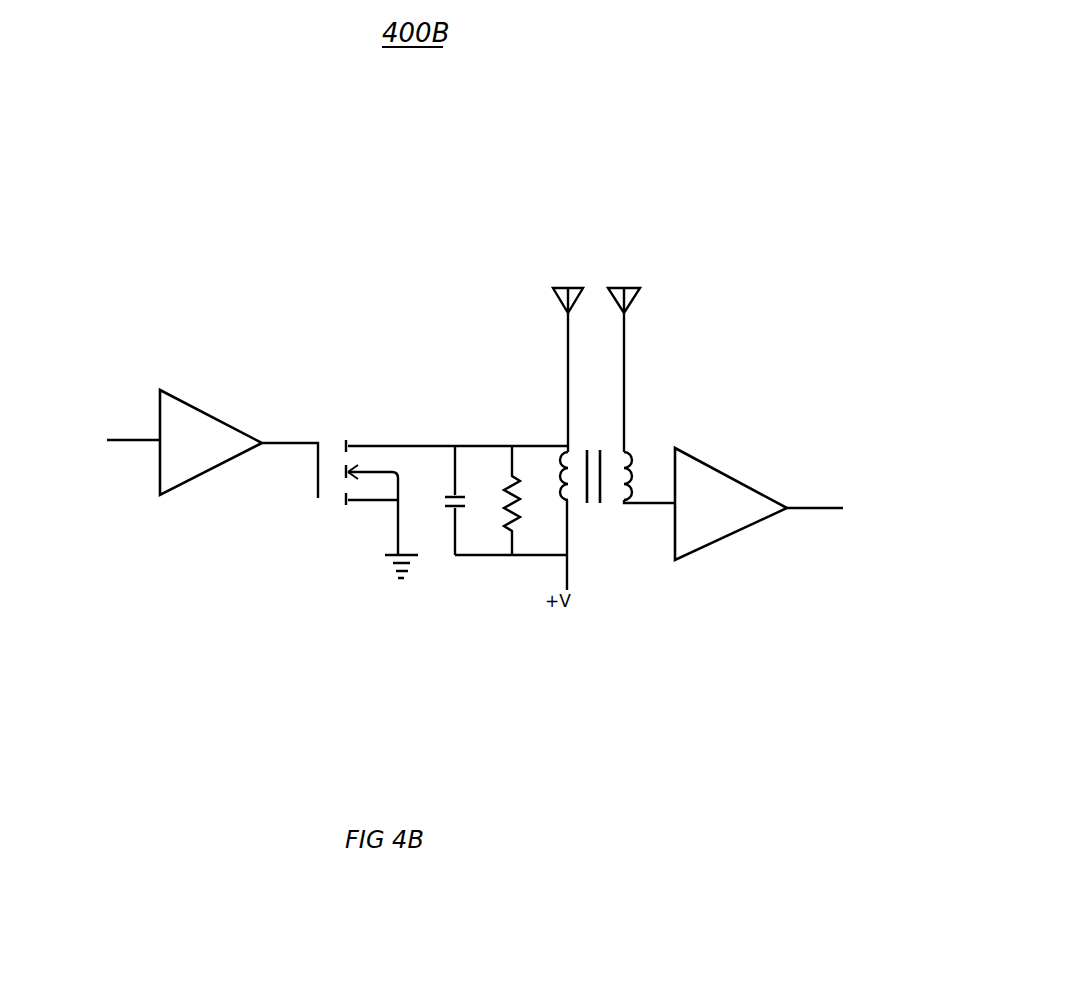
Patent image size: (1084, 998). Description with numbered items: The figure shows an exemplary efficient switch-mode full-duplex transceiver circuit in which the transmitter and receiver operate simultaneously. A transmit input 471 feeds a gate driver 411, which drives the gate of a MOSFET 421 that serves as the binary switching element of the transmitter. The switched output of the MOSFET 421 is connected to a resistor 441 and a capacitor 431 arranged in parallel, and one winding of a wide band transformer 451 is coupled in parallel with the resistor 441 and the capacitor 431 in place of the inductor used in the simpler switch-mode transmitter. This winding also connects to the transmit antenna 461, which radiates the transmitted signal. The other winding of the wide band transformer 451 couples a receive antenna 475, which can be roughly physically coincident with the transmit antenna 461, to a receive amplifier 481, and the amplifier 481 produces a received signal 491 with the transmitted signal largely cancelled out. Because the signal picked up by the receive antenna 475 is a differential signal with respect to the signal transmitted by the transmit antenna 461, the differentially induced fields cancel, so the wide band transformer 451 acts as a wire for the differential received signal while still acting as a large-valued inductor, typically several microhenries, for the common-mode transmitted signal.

The transmit input XMT 471 is at (88, 403).
The gate driver 411 is at (203, 396).
The MOSFET 421 is at (368, 430).
The capacitor 431 is at (471, 467).
The resistor 441 is at (529, 467).
The transmit antenna 461 is at (557, 340).
The receive antenna 475 is at (644, 348).
The wide band transformer 451 is at (614, 518).
The receive amplifier 481 is at (738, 469).
The received signal 491 is at (882, 486).